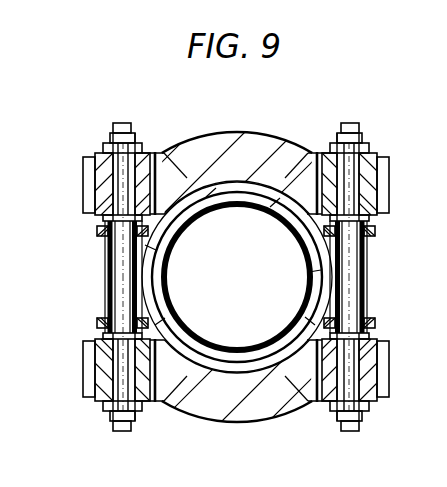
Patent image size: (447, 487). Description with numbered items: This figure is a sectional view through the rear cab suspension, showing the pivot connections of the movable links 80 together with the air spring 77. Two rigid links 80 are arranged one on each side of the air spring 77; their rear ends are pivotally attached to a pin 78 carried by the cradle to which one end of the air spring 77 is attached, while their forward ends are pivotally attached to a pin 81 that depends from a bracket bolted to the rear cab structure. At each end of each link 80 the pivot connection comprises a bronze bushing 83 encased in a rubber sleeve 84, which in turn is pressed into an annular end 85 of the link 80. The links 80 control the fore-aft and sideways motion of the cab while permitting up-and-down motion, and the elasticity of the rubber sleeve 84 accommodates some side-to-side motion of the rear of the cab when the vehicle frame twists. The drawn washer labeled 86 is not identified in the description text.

The air spring 77 is at (192, 338).
The pin 78 is at (352, 273).
The movable link 80 is at (255, 138).
The pin 81 is at (110, 268).
The bronze bushing 83 is at (97, 153).
The rubber sleeve 84 is at (97, 158).
The annular end 85 is at (87, 180).
The washer 86 is at (380, 380).